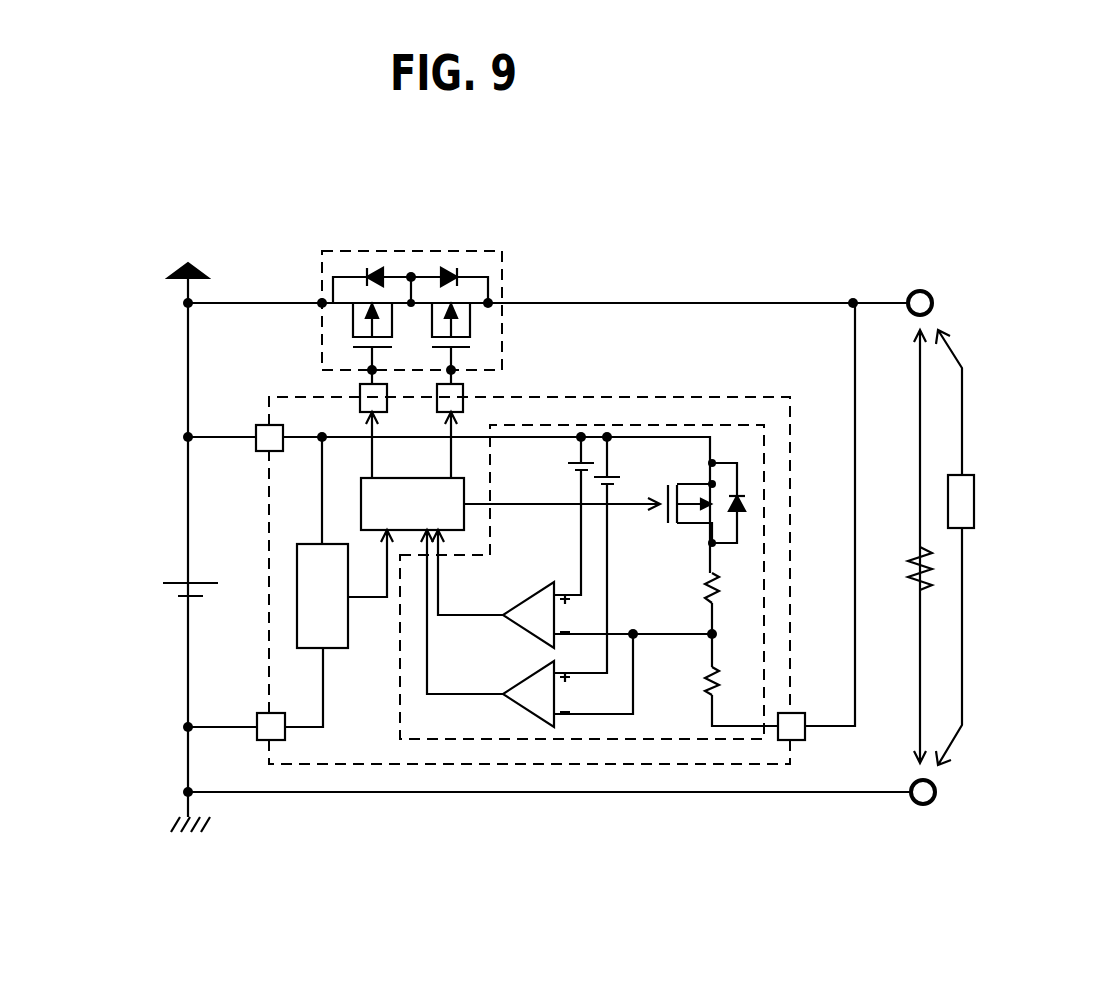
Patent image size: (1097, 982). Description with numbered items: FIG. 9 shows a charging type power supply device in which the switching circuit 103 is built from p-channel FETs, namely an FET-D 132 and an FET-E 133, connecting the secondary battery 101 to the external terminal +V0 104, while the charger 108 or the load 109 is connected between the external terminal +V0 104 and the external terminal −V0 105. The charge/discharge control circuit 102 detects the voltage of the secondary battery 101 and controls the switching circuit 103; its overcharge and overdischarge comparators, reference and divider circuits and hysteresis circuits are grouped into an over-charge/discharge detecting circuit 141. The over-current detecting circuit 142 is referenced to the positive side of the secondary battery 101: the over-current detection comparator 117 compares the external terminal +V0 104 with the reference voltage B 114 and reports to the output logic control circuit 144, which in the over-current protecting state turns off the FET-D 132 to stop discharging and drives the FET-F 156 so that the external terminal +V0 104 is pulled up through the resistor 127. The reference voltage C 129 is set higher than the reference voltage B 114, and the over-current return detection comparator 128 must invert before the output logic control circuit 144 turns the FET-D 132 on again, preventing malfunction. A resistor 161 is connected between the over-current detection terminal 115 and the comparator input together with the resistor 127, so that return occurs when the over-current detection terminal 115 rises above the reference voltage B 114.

The secondary battery 101 is at (165, 597).
The charge/discharge control circuit 102 is at (282, 764).
The switching circuit 103 is at (313, 267).
The external terminal +V0 104 is at (922, 289).
The external terminal −V0 105 is at (924, 807).
The charger 108 is at (973, 532).
The load 109 is at (935, 596).
The reference voltage circuit B 114 is at (593, 472).
The over-current detection terminal 115 is at (790, 745).
The over-current detection comparator 117 is at (522, 635).
The resistor 127 is at (718, 617).
The over-current return detection comparator 128 is at (523, 714).
The reference voltage C 129 is at (697, 477).
The FET-D 132 is at (380, 300).
The FET-E 133 is at (478, 296).
The over-charge/discharge detecting circuit 141 is at (290, 555).
The over-current detecting circuit 142 is at (729, 423).
The output logic control circuit 144 is at (355, 490).
The FET-F 156 is at (627, 483).
The resistor 161 is at (697, 687).